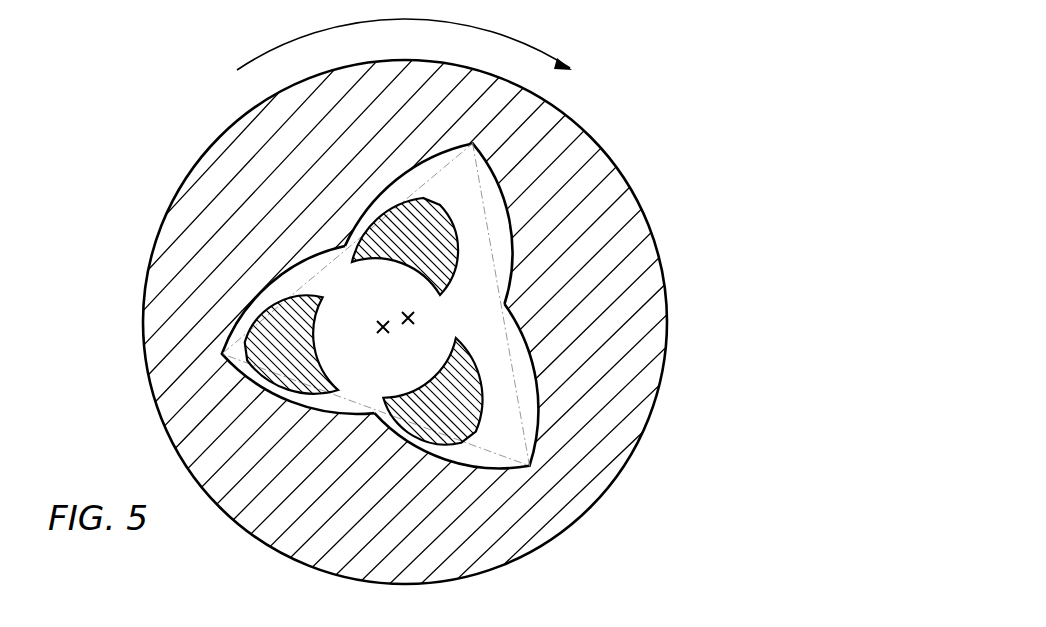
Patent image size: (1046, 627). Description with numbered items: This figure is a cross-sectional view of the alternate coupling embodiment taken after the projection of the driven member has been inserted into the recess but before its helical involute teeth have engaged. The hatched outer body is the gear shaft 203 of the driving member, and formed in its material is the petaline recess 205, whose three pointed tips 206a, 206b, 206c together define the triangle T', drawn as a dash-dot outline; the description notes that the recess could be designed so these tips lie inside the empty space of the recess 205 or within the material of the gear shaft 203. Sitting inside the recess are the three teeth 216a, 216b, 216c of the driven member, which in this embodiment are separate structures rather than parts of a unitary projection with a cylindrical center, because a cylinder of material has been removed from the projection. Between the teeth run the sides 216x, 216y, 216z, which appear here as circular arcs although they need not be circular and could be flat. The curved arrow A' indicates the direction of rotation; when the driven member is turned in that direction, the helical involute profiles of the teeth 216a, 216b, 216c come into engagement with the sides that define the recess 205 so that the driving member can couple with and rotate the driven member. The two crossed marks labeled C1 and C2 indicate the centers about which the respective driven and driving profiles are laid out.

The gear shaft 203 is at (190, 123).
The recess 205 is at (413, 380).
The tip 206a is at (222, 353).
The tip 206b is at (473, 143).
The tip 206c is at (530, 466).
The tooth 216a is at (277, 362).
The tooth 216b is at (482, 265).
The tooth 216c is at (443, 413).
The side 216x is at (308, 347).
The side 216y is at (410, 262).
The side 216z is at (423, 385).
The arrow A' is at (404, 36).
The triangle T' is at (467, 304).
The rotor center C1 is at (387, 341).
The stator center C2 is at (420, 328).